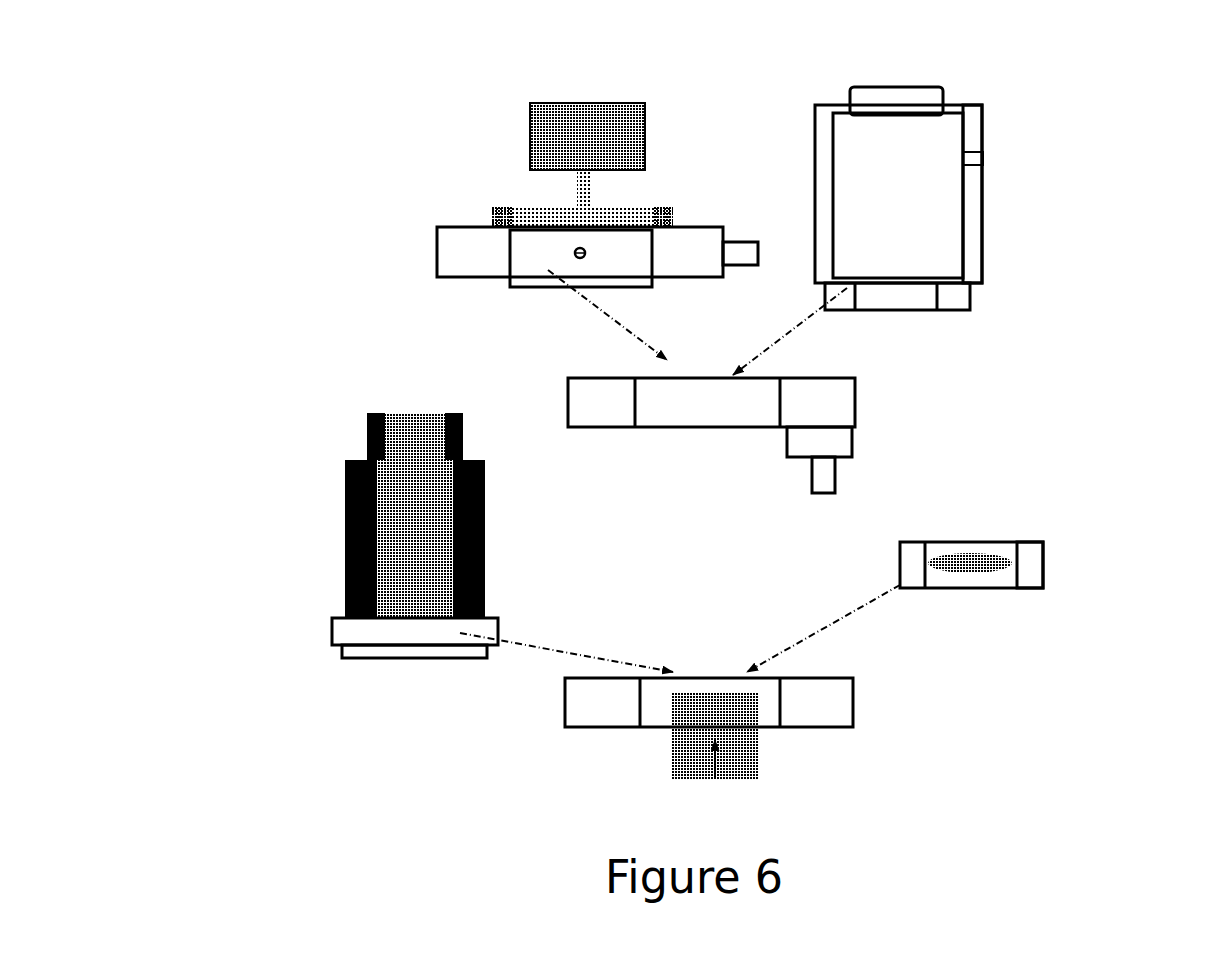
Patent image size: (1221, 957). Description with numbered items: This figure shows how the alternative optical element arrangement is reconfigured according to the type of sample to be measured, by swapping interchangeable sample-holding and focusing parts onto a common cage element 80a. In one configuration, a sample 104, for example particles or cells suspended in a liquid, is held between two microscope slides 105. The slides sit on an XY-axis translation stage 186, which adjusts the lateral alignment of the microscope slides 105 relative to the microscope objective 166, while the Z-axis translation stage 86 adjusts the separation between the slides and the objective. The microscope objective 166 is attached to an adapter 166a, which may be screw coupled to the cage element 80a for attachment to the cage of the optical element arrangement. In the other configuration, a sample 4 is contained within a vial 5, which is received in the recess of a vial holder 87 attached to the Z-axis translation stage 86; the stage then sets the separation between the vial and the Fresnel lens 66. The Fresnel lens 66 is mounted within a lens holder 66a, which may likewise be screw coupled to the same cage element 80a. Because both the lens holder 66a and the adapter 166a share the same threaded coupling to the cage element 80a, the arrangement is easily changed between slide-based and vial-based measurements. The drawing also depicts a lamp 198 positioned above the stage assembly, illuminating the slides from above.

The sample 4 is at (907, 163).
The vial 5 is at (967, 222).
The vial holder 87 is at (972, 258).
The Z-axis translation stage 86 is at (860, 408).
The Fresnel lens 66 is at (972, 560).
The lens holder 66a is at (1030, 567).
The cage element 80a is at (813, 705).
The microscope objective 166 is at (332, 560).
The adapter 166a is at (337, 633).
The XY-axis translation stage 186 is at (430, 245).
The microscope slides 105 is at (498, 213).
The sample 104 is at (572, 223).
The lamp 198 is at (647, 138).